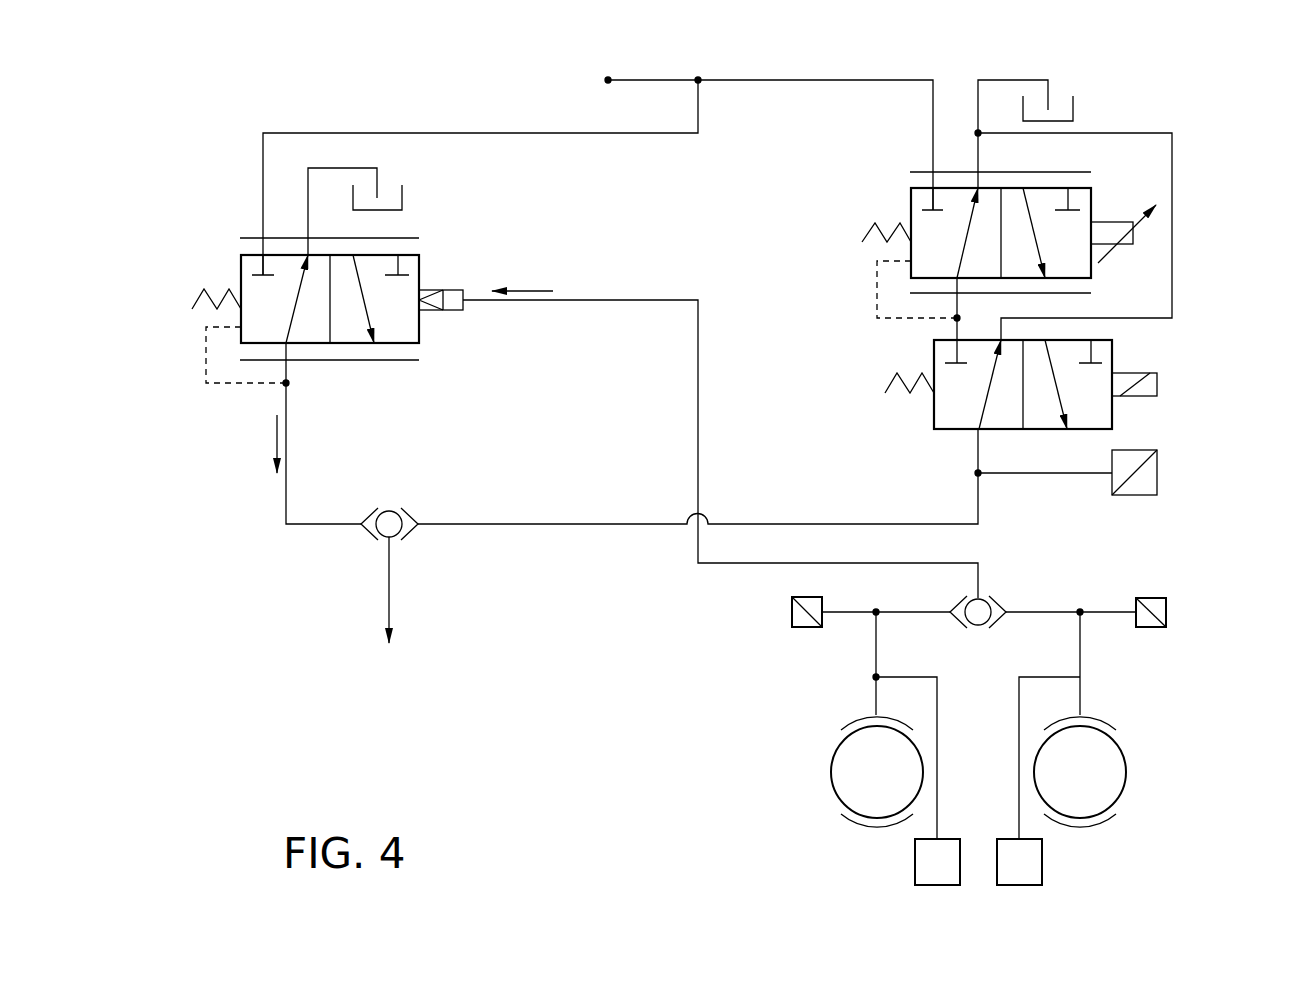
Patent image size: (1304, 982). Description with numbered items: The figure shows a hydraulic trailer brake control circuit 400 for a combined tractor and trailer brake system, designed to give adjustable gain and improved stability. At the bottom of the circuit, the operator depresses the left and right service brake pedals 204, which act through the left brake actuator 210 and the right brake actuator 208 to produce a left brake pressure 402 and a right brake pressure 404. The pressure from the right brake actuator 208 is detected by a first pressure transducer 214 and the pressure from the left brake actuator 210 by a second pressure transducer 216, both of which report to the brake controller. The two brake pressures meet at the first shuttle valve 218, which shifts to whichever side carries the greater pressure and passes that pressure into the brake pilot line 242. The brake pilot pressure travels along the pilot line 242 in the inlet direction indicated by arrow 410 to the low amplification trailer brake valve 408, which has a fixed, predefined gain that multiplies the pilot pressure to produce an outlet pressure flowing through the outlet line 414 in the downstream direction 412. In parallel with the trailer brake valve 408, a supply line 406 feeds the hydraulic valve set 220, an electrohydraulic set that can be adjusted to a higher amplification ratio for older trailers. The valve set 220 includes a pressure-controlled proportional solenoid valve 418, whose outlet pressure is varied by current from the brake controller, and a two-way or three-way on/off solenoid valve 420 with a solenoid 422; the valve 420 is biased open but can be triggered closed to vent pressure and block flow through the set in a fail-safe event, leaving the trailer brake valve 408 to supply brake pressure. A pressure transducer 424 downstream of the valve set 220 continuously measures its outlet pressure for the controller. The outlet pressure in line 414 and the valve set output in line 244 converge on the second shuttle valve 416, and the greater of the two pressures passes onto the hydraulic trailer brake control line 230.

The hydraulic trailer brake control circuit 400 is at (107, 157).
The supply line 406 is at (606, 80).
The low amplification trailer brake valve 408 is at (208, 270).
The inlet direction arrow 410 is at (532, 290).
The downstream direction 412 is at (277, 435).
The outlet line 414 is at (313, 526).
The shuttle valve 416 is at (389, 512).
The hydraulic trailer brake control line 230 is at (389, 597).
The line 244 is at (555, 522).
The brake pilot line 242 is at (748, 562).
The hydraulic valve set 220 is at (1212, 150).
The proportional solenoid valve 418 is at (885, 200).
The on/off solenoid valve 420 is at (907, 353).
The solenoid 422 is at (1157, 382).
The pressure transducer 424 is at (1157, 472).
The first shuttle valve 218 is at (983, 628).
The left brake pressure 402 is at (917, 612).
The right brake pressure 404 is at (1038, 612).
The second pressure transducer 216 is at (792, 612).
The first pressure transducer 214 is at (1166, 612).
The left brake actuator 210 is at (831, 772).
The right brake actuator 208 is at (1126, 772).
The brake pedals 204 is at (915, 862).